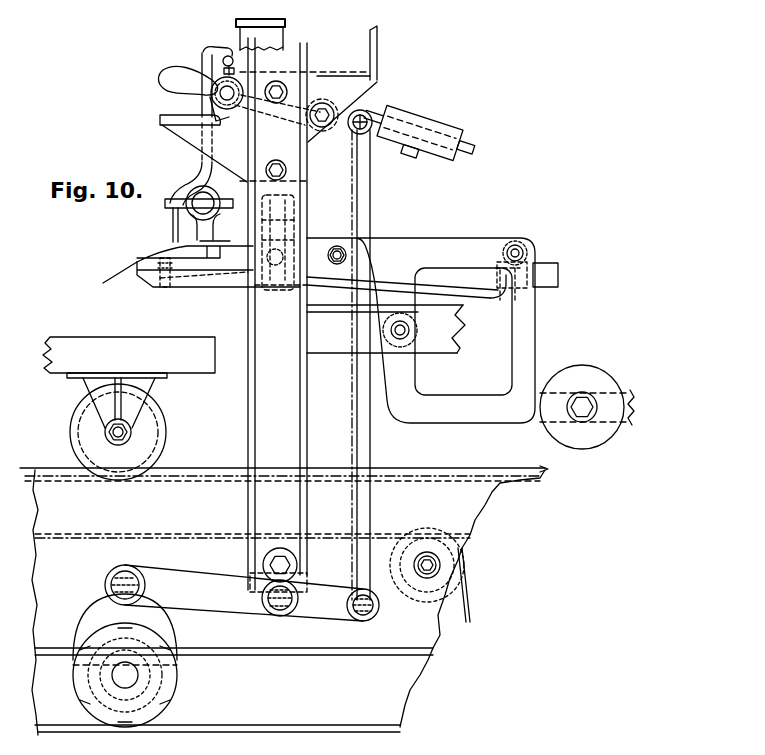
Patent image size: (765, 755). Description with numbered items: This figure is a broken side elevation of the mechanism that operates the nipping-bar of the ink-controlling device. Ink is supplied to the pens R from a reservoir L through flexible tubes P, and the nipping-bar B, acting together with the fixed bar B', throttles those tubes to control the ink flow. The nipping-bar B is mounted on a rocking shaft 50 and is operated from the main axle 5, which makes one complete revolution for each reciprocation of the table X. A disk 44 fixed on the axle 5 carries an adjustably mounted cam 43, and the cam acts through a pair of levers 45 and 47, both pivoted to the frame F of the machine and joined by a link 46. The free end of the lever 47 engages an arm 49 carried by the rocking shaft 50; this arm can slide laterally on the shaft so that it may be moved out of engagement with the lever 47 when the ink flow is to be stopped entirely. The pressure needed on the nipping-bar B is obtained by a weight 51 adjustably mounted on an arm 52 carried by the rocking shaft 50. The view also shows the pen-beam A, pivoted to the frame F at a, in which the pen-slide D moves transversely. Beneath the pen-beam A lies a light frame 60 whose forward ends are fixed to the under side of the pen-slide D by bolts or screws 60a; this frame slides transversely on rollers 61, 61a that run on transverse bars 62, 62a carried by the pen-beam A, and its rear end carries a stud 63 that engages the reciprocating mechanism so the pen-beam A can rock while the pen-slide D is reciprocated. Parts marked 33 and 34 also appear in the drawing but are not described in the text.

The reservoir L is at (273, 37).
The frame F is at (282, 386).
The link 46 is at (353, 456).
The lever 47 is at (279, 106).
The weight 51 is at (425, 130).
The arm 52 is at (466, 156).
The roller 61 is at (279, 204).
The transverse bar 62 is at (300, 246).
The pen-beam A is at (488, 232).
The pivot a is at (410, 331).
The light frame 60 is at (476, 292).
The roller 61a is at (510, 296).
The transverse bar 62a is at (520, 243).
The stud 63 is at (556, 275).
The reciprocating table X is at (118, 345).
The pen-slide D is at (161, 253).
The pen R is at (121, 273).
The bolt or screw 60a is at (167, 288).
The flexible tube P is at (198, 176).
The nipping-bar B is at (192, 93).
The fixed bar B' is at (188, 146).
The rocking shaft 50 is at (210, 70).
The arm 49 is at (265, 108).
The lever 45 is at (242, 584).
The cam 43 is at (93, 619).
The disk 44 is at (170, 684).
The main axle 5 is at (125, 675).
The roller 33 is at (458, 565).
The guide rod / plate 34 is at (466, 606).